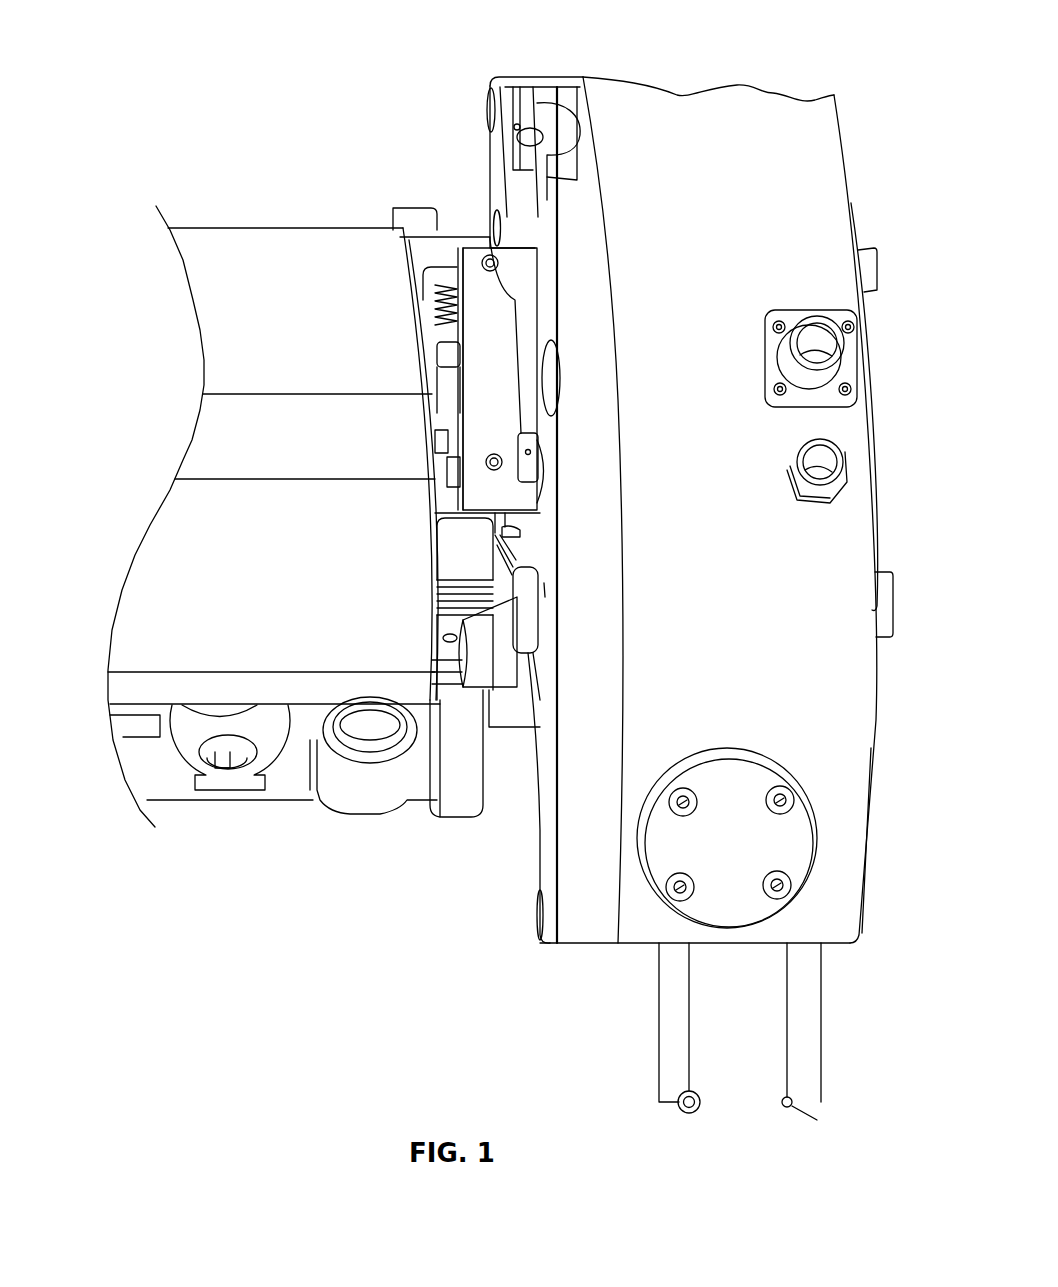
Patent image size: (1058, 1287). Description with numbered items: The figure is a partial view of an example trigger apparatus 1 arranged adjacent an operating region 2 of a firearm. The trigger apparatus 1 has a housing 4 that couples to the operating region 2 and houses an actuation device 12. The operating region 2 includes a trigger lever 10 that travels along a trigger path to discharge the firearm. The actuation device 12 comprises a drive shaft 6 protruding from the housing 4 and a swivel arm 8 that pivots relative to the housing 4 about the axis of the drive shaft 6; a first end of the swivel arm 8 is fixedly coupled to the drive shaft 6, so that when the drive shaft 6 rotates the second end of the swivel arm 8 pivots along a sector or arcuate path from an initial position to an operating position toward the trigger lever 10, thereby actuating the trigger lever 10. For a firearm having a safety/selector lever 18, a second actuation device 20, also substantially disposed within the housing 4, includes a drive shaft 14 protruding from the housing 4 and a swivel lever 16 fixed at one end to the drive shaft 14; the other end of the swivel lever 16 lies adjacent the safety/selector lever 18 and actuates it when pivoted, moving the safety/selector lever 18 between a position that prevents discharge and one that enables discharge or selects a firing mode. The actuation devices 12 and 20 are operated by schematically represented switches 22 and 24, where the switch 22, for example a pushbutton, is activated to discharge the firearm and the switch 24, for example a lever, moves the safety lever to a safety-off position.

The trigger apparatus 1 is at (716, 481).
The operating region 2 is at (230, 220).
The housing 4 is at (696, 112).
The drive shaft 6 is at (513, 297).
The swivel arm 8 is at (472, 257).
The trigger lever 10 is at (440, 275).
The actuation device 12 is at (291, 382).
The drive shaft 14 is at (530, 690).
The swivel lever 16 is at (478, 680).
The safety/selector lever 18 is at (447, 708).
The actuation device 20 is at (267, 609).
The switch 22 is at (688, 1114).
The switch 24 is at (787, 1110).